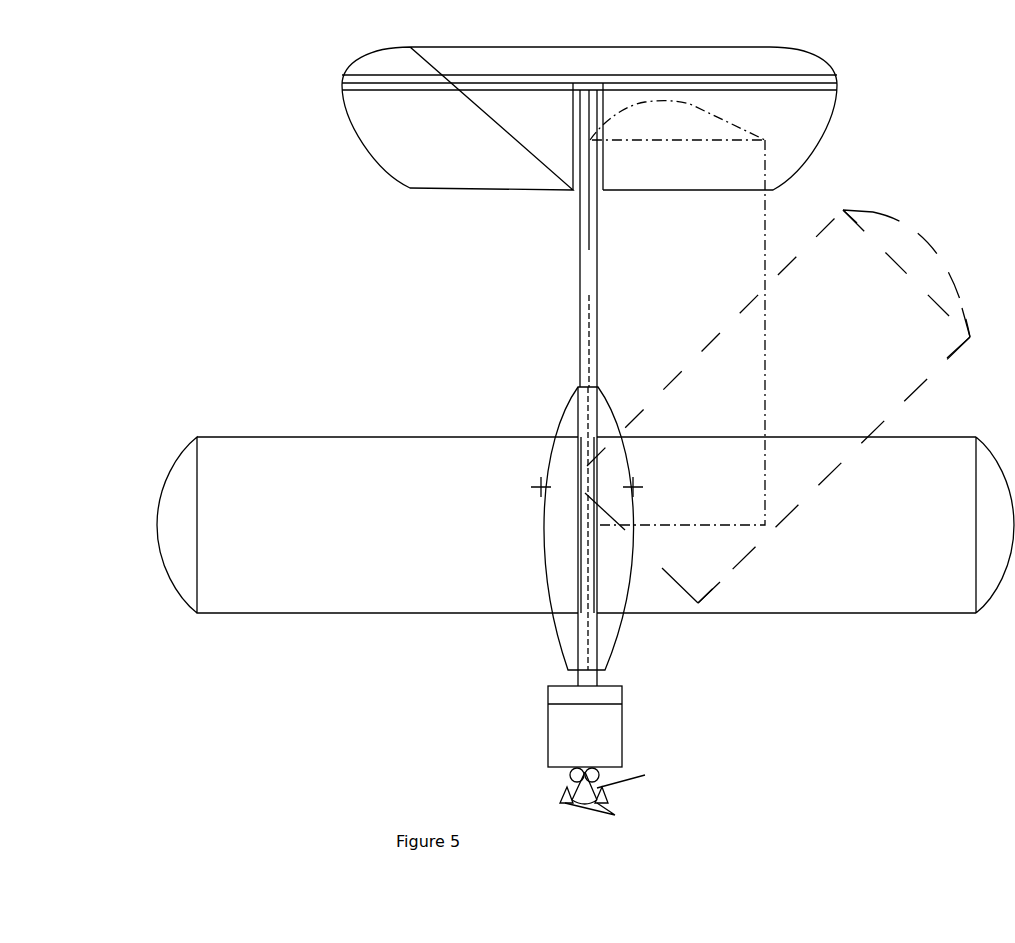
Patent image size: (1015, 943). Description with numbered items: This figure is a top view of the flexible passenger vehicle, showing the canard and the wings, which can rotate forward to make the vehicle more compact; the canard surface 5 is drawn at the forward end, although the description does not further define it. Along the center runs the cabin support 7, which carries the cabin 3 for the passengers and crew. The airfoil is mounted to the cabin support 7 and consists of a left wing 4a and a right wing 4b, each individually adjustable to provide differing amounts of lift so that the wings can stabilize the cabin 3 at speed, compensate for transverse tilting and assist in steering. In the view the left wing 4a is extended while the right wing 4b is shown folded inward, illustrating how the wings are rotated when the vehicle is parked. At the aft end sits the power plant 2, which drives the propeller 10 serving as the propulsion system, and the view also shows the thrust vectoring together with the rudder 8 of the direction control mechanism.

The power plant 2 is at (585, 726).
The cabin 3 is at (587, 536).
The left wing 4a is at (367, 525).
The right wing 4b is at (800, 376).
The horizontal stabilizer 5 is at (589, 118).
The cabin support 7 is at (588, 238).
The rudder 8 is at (615, 815).
The propeller 10 is at (570, 775).